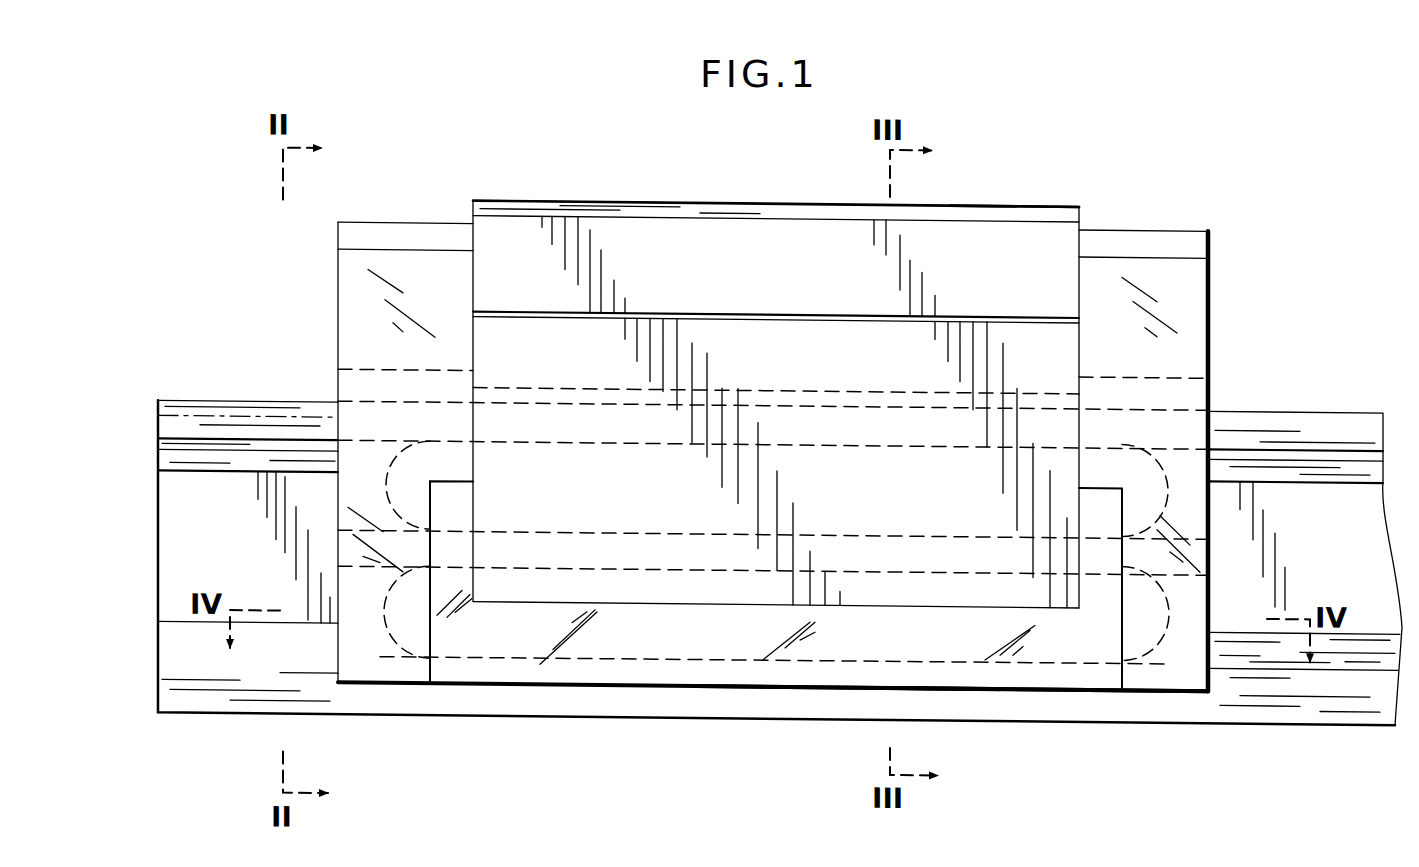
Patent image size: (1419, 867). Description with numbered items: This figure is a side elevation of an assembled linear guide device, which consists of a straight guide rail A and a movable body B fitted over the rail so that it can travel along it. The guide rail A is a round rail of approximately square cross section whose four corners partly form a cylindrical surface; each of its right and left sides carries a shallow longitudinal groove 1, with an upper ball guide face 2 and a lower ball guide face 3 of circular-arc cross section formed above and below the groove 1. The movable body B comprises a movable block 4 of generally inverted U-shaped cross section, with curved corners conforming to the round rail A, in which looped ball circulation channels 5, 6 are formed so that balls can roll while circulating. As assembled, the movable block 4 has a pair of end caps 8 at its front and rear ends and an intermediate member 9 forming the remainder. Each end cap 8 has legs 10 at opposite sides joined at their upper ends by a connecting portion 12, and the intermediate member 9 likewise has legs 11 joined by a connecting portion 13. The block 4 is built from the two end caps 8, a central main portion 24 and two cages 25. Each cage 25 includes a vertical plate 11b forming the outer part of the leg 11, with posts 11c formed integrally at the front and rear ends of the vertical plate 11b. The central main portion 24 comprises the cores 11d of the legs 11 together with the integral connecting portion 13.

The shallow groove 1 is at (227, 487).
The upper ball guide face 2 is at (1312, 460).
The lower ball guide face 3 is at (1348, 664).
The movable block 4 is at (775, 200).
The ball circulation channel 5 is at (598, 450).
The ball circulation channel 6 is at (597, 652).
The end cap 8 is at (383, 243).
The intermediate member 9 is at (823, 210).
The leg 10 is at (385, 673).
The leg 11 is at (735, 683).
The vertical plate 11b is at (814, 683).
The post 11c is at (443, 496).
The core 11d is at (688, 597).
The connecting portion 12 is at (445, 243).
The connecting portion 13 is at (961, 227).
The central main portion 24 is at (1030, 201).
The cage 25 is at (1005, 692).
The guide rail A is at (1290, 717).
The movable body B is at (671, 200).